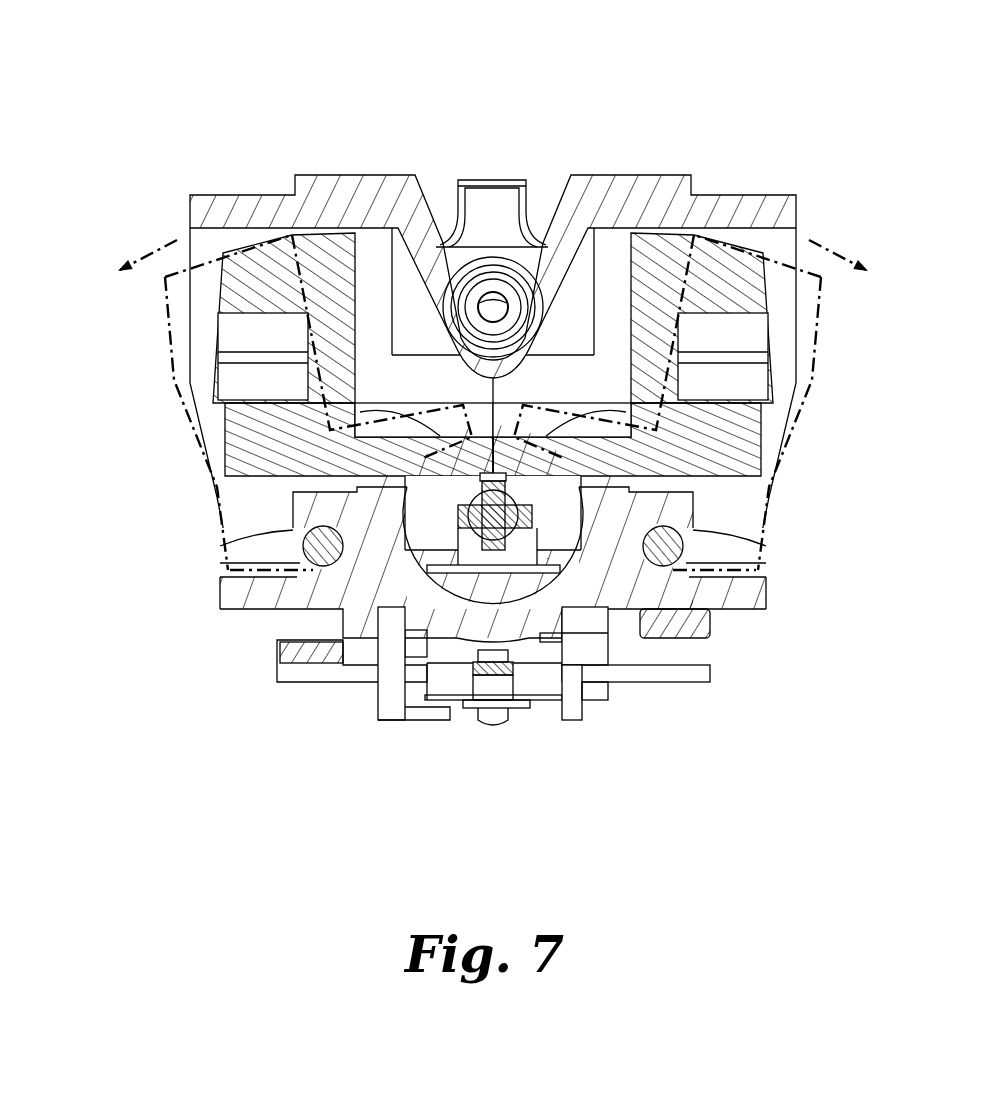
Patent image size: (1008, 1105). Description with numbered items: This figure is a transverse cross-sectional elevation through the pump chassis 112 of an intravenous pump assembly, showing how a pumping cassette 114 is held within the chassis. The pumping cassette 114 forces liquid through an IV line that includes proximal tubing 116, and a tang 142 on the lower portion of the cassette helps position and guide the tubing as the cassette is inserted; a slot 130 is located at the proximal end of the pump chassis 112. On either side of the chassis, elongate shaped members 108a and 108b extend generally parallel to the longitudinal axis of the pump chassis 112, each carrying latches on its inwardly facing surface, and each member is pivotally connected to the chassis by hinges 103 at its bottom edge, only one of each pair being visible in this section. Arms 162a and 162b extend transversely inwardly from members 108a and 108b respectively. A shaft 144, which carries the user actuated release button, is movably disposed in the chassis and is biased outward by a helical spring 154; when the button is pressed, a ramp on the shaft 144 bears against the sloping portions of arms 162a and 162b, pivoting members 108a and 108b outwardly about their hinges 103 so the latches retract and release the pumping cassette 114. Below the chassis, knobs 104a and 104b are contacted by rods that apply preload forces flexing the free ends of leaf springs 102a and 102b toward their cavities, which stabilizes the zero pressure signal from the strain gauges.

The pumping cassette 114 is at (445, 150).
The slot 130 is at (443, 243).
The tang 142 is at (523, 200).
The proximal tubing 116 is at (517, 288).
The arm 162a is at (355, 404).
The arm 162b is at (505, 415).
The elongate shaped member 108a is at (227, 425).
The elongate shaped member 108b is at (760, 437).
The hinges 103 is at (290, 535).
The helical spring 154 is at (462, 530).
The shaft 144 is at (523, 522).
The pump chassis 112 is at (208, 780).
The leaf spring 102a is at (550, 703).
The leaf spring 102b is at (427, 643).
The knob 104a is at (513, 722).
The knob 104b is at (480, 655).